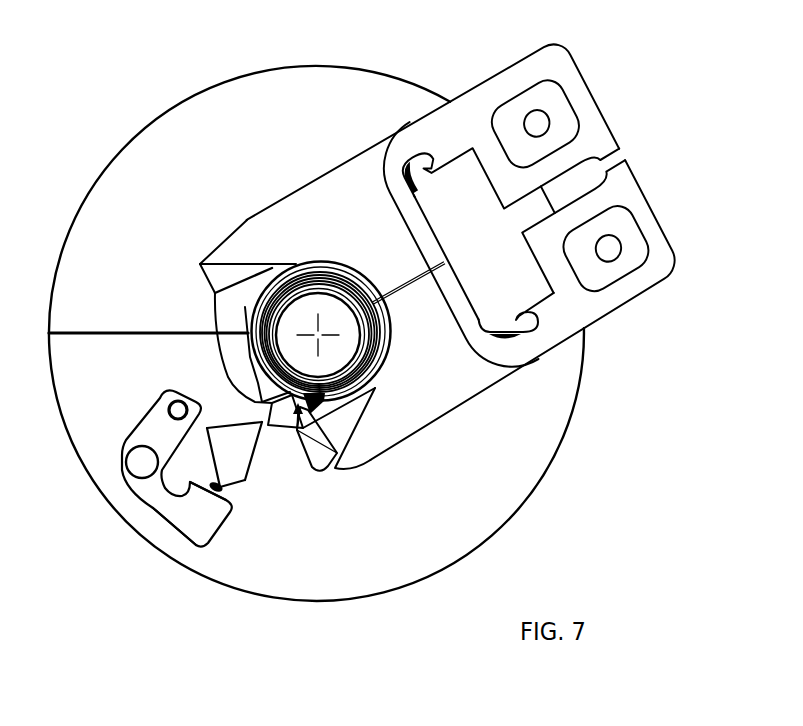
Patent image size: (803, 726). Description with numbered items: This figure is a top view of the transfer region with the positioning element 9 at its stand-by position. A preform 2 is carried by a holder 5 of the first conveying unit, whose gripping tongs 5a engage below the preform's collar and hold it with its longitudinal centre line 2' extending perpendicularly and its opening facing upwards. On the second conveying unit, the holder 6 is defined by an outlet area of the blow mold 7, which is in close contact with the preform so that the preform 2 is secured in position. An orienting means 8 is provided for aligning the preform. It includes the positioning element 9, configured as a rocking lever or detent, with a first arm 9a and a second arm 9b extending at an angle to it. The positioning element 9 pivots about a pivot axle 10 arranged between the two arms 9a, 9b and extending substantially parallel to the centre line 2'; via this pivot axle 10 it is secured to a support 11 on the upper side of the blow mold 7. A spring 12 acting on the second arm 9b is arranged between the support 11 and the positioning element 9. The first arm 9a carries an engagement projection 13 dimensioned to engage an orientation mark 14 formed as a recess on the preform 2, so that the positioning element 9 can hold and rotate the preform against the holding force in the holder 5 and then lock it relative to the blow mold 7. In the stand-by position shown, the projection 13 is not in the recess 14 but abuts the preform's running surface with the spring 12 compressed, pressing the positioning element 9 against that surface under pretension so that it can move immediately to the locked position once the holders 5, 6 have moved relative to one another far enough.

The blow mold 7 is at (258, 141).
The holder 5 is at (465, 245).
The gripping tongs 5a is at (453, 254).
The preform 2 is at (281, 333).
The longitudinal centre line 2' is at (320, 329).
The engagement projection 13 is at (273, 401).
The positioning element 9 is at (239, 469).
The first arm 9a is at (243, 425).
The second arm 9b is at (235, 481).
The holder 6 is at (297, 430).
The orientation mark 14 is at (333, 468).
The orienting means 8 is at (156, 482).
The pivot axle 10 is at (171, 405).
The support 11 is at (210, 487).
The spring 12 is at (180, 523).